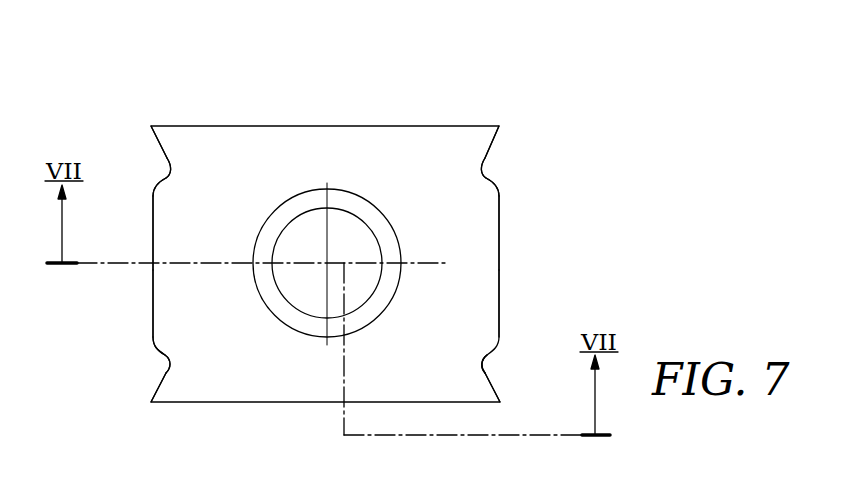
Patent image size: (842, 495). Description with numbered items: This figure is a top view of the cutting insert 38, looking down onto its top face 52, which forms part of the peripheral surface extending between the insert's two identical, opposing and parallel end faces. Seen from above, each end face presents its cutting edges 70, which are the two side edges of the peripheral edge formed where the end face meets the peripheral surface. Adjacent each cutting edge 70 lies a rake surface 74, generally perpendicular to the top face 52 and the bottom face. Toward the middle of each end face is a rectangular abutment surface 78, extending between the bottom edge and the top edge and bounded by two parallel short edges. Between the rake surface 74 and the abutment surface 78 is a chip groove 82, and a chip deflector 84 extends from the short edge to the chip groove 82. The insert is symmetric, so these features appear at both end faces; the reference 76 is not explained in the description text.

The cutting insert 38 is at (606, 135).
The top face 52 is at (242, 199).
The cutting edges 70 is at (151, 126).
The rake surface 74 is at (497, 140).
The side face 76 is at (151, 243).
The abutment surface 78 is at (153, 302).
The chip groove 82 is at (487, 175).
The chip deflector 84 is at (152, 345).